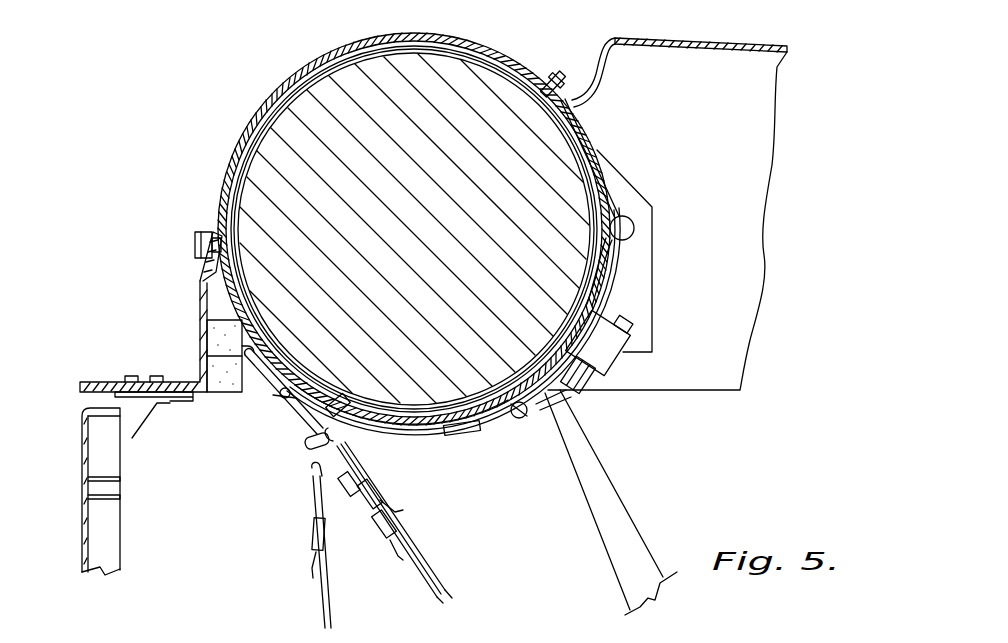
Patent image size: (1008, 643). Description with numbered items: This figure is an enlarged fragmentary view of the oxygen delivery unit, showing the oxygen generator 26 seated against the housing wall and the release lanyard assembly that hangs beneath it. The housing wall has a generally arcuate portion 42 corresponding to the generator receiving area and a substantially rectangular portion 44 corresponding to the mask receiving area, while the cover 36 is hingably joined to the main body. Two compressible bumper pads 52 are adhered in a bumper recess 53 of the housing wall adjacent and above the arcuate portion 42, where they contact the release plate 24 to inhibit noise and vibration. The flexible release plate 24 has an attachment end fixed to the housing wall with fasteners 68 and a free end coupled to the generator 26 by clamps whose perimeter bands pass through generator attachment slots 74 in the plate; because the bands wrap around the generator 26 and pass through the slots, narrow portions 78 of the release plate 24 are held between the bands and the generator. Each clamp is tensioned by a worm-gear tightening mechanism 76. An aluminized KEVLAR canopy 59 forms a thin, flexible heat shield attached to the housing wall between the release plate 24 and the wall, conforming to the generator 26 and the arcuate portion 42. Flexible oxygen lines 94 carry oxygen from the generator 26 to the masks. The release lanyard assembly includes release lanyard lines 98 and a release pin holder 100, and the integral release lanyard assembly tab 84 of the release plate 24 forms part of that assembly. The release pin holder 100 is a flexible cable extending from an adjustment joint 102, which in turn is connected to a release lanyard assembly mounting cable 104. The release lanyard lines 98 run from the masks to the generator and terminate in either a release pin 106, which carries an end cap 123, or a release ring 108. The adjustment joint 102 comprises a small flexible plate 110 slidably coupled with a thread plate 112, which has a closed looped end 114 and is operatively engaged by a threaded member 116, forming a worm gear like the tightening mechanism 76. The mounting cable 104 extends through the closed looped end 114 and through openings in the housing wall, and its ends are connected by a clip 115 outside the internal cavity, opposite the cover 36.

The release plate 24 is at (228, 300).
The oxygen generator 26 is at (356, 78).
The cover 36 is at (100, 520).
The arcuate portion 42 is at (312, 86).
The rectangular portion 44 is at (742, 44).
The bumper pads 52 is at (222, 336).
The bumper recess 53 is at (218, 285).
The canopy 59 is at (260, 140).
The fasteners 68 is at (197, 236).
The generator attachment slots 74 is at (337, 416).
The tightening mechanism 76 is at (608, 332).
The narrow portions 78 is at (367, 418).
The release lanyard assembly tab 84 is at (278, 394).
The oxygen lines 94 is at (622, 525).
The release lanyard lines 98 is at (320, 597).
The release pin holder 100 is at (300, 392).
The adjustment joint 102 is at (640, 405).
The release lanyard assembly mounting cable 104 is at (622, 216).
The release pin 106 is at (292, 430).
The release ring 108 is at (304, 446).
The flexible plate 110 is at (516, 418).
The thread plate 112 is at (562, 396).
The closed looped end 114 is at (634, 236).
The clip 115 is at (549, 76).
The threaded member 116 is at (600, 388).
The end cap 123 is at (250, 358).